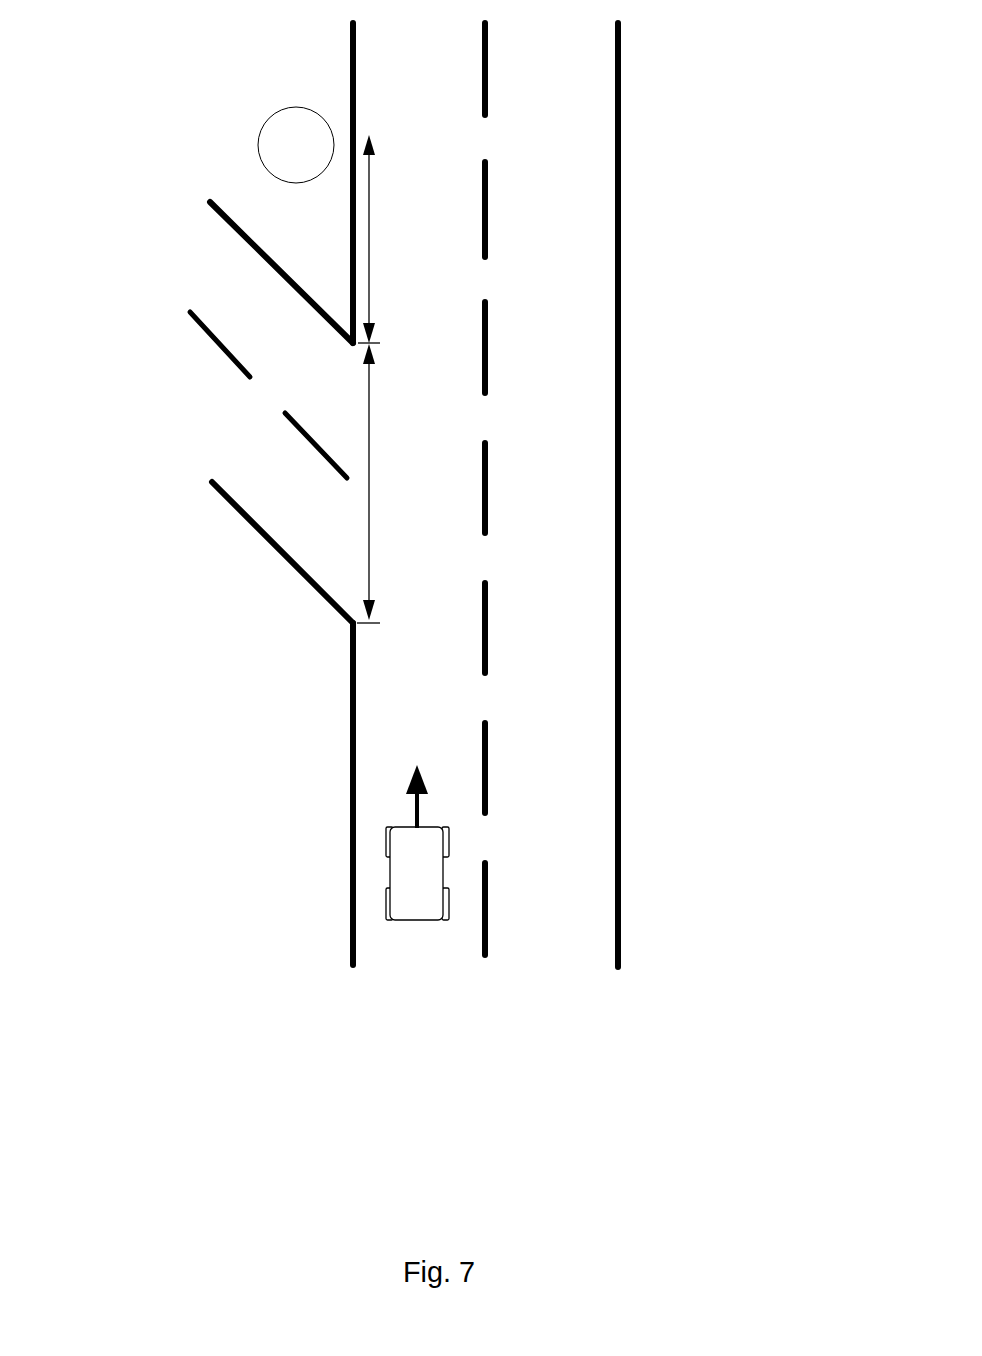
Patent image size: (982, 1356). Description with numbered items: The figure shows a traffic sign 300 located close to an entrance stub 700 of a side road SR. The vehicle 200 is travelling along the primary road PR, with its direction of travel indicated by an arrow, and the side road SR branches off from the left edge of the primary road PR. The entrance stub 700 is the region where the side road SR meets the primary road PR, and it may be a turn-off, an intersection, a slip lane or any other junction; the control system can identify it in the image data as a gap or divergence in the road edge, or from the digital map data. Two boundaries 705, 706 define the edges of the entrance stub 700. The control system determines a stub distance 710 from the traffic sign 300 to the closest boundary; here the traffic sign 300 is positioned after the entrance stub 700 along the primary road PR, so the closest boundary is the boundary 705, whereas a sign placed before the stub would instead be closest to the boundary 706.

The vehicle 200 is at (423, 855).
The traffic sign 300 is at (272, 148).
The entrance stub 700 is at (370, 548).
The boundary 705 is at (453, 343).
The boundary 706 is at (437, 624).
The stub distance 710 is at (369, 247).
The primary road PR is at (552, 367).
The side road SR is at (270, 507).